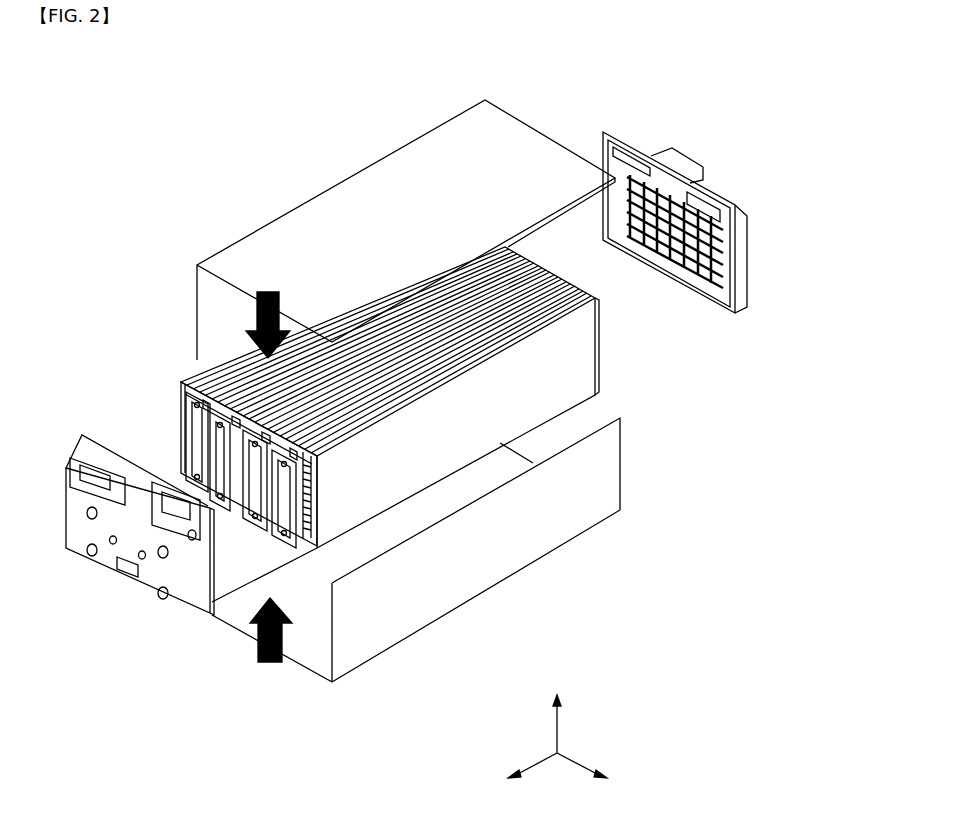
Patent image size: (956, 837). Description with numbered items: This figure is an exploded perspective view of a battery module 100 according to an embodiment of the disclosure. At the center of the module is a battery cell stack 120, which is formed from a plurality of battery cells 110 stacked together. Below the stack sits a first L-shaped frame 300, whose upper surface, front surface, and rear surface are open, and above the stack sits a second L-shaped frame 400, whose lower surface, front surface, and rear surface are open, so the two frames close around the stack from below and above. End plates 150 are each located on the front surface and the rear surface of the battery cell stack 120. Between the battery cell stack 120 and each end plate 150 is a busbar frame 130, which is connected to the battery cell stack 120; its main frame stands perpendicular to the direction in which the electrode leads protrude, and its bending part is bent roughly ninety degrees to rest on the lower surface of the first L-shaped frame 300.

The battery module 100 is at (190, 110).
The battery cell 110 is at (407, 473).
The battery cell stack 120 is at (232, 367).
The busbar frame 130 is at (166, 422).
The end plate 150 is at (112, 562).
The first L-shaped frame 300 is at (503, 548).
The second L-shaped frame 400 is at (350, 202).